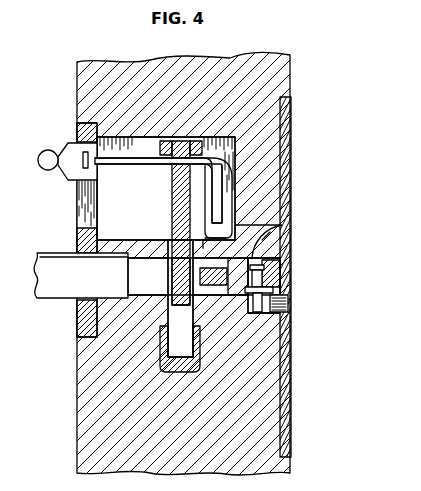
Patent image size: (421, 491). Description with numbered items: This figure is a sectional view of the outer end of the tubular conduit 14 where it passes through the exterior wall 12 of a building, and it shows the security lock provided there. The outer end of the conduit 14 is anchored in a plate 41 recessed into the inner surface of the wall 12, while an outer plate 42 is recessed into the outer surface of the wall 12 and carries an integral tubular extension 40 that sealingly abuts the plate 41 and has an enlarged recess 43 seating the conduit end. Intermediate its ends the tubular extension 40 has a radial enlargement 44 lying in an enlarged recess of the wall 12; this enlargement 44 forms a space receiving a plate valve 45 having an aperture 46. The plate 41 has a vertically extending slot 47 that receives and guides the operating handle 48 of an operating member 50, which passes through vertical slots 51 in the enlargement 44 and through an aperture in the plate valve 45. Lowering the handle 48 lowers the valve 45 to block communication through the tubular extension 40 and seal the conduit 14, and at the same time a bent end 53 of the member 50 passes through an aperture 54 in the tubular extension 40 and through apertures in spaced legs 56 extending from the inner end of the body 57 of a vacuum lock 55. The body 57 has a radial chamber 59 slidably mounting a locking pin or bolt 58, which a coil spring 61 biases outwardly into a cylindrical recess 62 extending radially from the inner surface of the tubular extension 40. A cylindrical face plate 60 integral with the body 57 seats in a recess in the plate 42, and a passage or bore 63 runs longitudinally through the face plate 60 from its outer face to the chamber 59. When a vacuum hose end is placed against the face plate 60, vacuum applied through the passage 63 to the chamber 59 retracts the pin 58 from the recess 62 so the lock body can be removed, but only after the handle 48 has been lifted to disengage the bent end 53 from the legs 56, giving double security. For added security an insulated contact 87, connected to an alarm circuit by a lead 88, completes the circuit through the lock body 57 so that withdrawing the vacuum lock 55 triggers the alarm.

The exterior wall 12 is at (258, 106).
The conduit 14 is at (42, 256).
The tubular extension 40 is at (126, 240).
The plate 41 is at (77, 240).
The outer plate 42 is at (291, 145).
The enlarged recess 43 is at (115, 296).
The radial enlargement 44 is at (168, 287).
The plate valve 45 is at (163, 148).
The aperture 46 is at (172, 268).
The vertically extending slot 47 is at (80, 189).
The operating handle 48 is at (45, 152).
The operating member 50 is at (121, 165).
The vertical slots 51 is at (162, 181).
The bent end 53 is at (230, 178).
The aperture 54 is at (203, 240).
The vacuum lock 55 is at (302, 256).
The spaced legs 56 is at (199, 262).
The body 57 is at (237, 300).
The locking pin or bolt 58 is at (284, 292).
The radial chamber 59 is at (273, 288).
The cylindrical face plate 60 is at (286, 313).
The coil spring 61 is at (273, 263).
The cylindrical recess 62 is at (263, 313).
The passage or bore 63 is at (281, 273).
The insulated contact 87 is at (268, 247).
The lead 88 is at (290, 220).